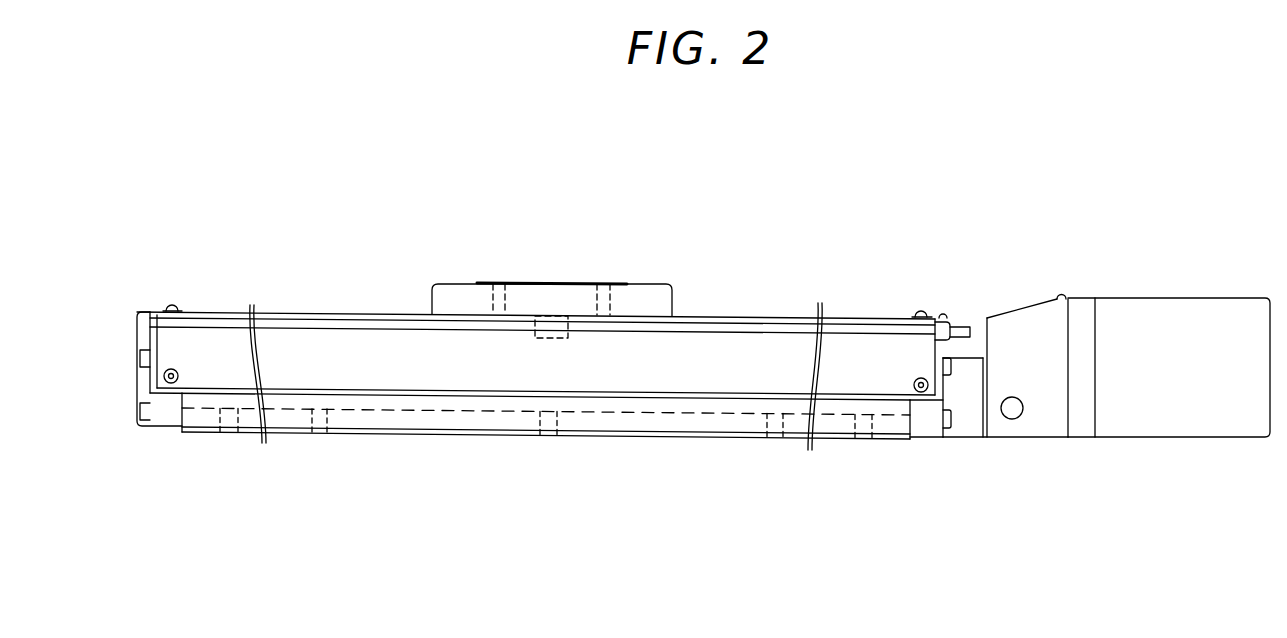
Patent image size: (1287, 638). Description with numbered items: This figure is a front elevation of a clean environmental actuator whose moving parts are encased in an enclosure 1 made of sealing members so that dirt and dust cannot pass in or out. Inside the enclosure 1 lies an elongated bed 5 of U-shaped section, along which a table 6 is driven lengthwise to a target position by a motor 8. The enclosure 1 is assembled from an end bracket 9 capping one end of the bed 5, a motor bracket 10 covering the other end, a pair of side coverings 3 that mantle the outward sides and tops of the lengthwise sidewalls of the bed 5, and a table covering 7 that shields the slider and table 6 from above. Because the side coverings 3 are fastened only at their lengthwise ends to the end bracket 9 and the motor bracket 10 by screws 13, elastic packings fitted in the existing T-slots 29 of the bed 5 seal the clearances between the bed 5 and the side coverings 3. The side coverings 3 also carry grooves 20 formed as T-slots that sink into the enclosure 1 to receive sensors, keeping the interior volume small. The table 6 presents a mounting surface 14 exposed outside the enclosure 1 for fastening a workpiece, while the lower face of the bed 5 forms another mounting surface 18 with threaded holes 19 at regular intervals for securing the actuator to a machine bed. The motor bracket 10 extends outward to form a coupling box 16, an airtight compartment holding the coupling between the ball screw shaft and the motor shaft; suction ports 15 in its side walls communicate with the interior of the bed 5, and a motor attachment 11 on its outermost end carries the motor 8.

The enclosure 1 is at (368, 315).
The side coverings 3 is at (727, 352).
The bed 5 is at (685, 428).
The table 6 is at (583, 283).
The table covering 7 is at (653, 302).
The motor 8 is at (1180, 317).
The end bracket 9 is at (152, 330).
The motor bracket 10 is at (1027, 322).
The motor attachment 11 is at (1085, 310).
The screws 13 is at (178, 307).
The mounting surface 14 is at (525, 283).
The suction ports 15 is at (1015, 415).
The coupling box 16 is at (1043, 375).
The mounting surface 18 is at (568, 437).
The threaded holes 19 is at (322, 435).
The grooves 20 is at (776, 330).
The T-slots 29 is at (305, 350).